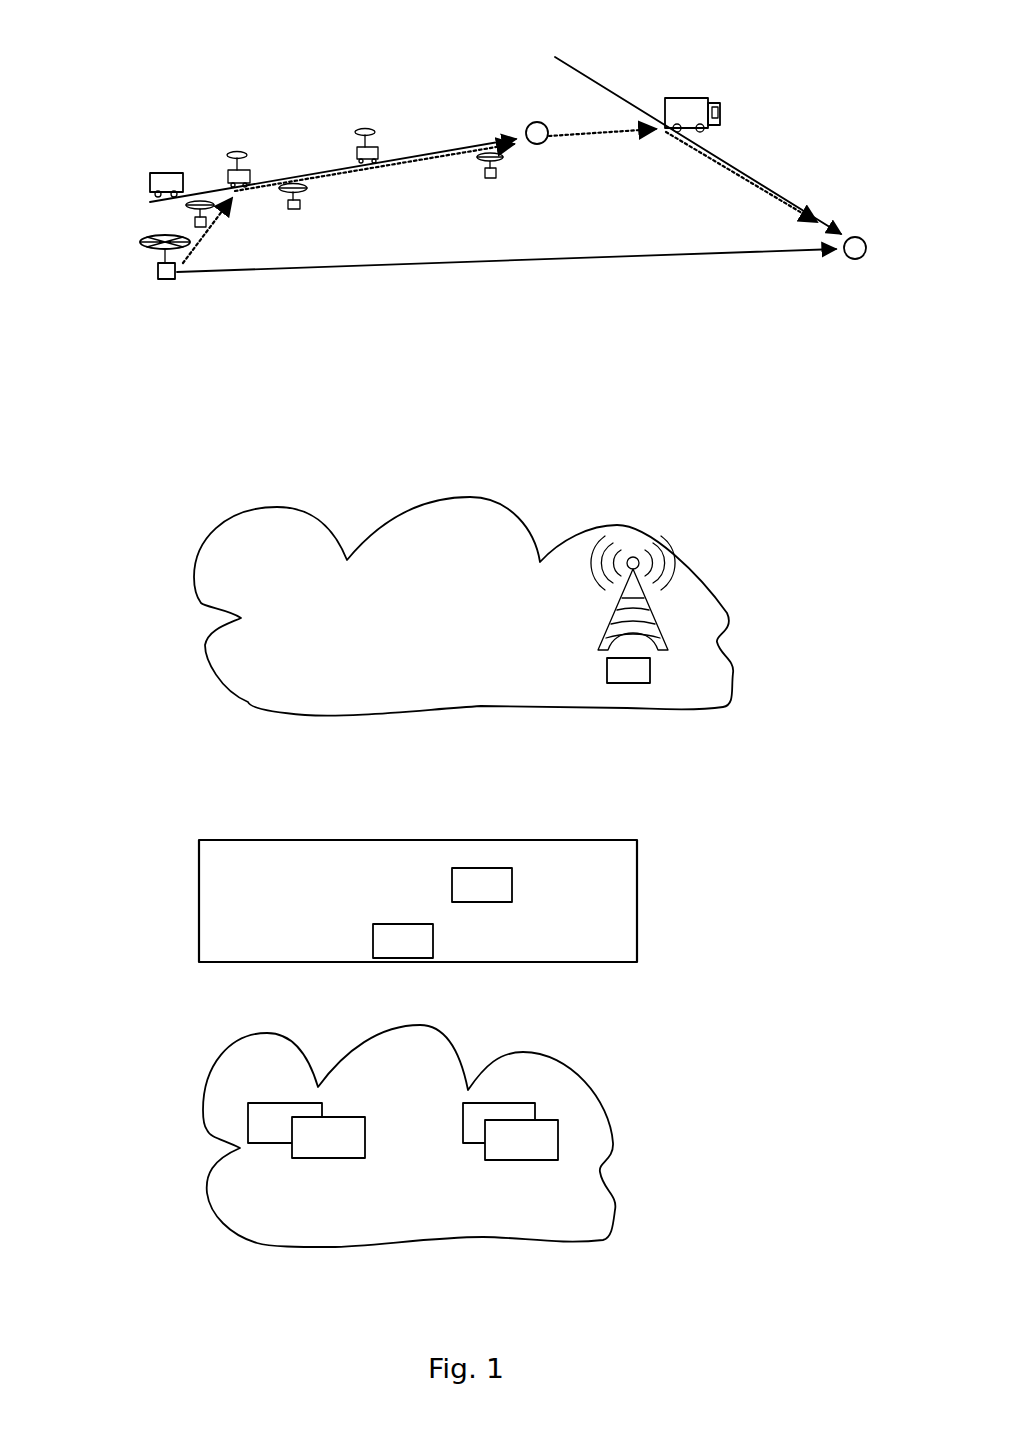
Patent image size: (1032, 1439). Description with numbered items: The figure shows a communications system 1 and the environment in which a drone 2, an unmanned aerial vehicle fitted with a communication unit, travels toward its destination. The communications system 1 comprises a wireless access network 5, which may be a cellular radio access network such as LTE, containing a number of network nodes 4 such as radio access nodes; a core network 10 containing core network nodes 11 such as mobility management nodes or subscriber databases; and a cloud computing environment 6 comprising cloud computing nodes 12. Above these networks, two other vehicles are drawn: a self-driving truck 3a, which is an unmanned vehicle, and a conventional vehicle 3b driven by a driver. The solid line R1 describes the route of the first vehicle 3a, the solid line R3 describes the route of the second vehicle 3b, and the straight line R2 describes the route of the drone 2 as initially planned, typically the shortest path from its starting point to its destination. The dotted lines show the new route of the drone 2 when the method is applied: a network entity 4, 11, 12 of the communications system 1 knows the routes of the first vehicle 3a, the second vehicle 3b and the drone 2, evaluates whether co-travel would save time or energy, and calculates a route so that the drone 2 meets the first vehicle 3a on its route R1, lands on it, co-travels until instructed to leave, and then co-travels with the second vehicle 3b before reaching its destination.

The communications system 1 is at (686, 454).
The drone 2 is at (163, 268).
The self-driving truck 3a is at (150, 200).
The conventional vehicle 3b is at (697, 108).
The network node 4 is at (650, 668).
The wireless access network 5 is at (285, 714).
The cloud computing environment 6 is at (560, 1240).
The core network 10 is at (613, 905).
The core network node 11 is at (413, 953).
The cloud computing node 12 is at (337, 1143).
The route of the first vehicle R1 is at (472, 134).
The initially planned route of the drone R2 is at (314, 279).
The route of the second vehicle R3 is at (596, 71).